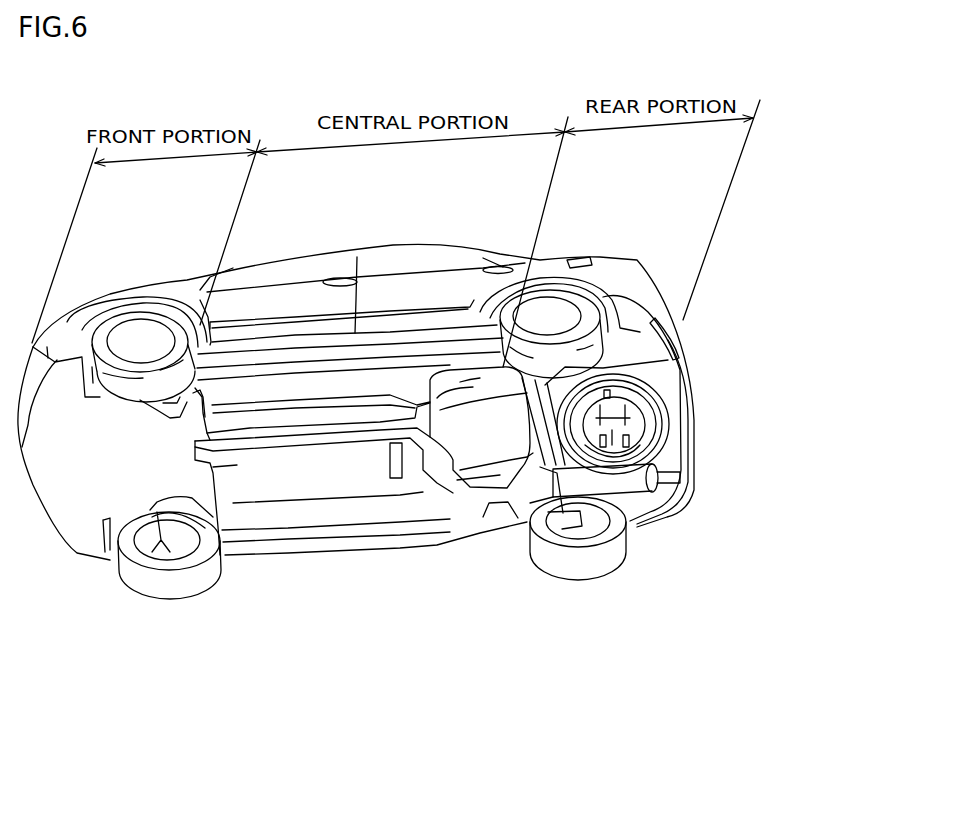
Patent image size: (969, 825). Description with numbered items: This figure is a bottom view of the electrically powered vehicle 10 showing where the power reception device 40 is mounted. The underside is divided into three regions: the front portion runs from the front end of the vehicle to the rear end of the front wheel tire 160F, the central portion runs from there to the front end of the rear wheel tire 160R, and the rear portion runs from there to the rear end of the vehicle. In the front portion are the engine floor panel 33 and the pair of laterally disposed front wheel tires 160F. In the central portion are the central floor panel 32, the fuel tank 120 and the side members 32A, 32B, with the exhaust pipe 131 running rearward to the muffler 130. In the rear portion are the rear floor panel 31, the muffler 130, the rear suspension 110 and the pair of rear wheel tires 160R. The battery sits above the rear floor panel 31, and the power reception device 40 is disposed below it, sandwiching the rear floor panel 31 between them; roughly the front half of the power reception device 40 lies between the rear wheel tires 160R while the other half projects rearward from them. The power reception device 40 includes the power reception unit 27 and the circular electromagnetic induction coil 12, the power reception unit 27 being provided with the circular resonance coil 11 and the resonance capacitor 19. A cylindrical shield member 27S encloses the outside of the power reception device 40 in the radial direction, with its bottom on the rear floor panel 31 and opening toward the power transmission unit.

The electrically powered vehicle 10 is at (416, 213).
The resonance coil 11 is at (647, 432).
The electromagnetic induction coil 12 is at (655, 450).
The capacitor 19 is at (645, 410).
The power reception unit 27 is at (741, 405).
The shield member 27S is at (653, 387).
The rear floor panel 31 is at (655, 368).
The central floor panel 32 is at (257, 388).
The side member 32A is at (483, 527).
The side member 32B is at (453, 367).
The engine floor panel 33 is at (78, 470).
The power reception device 40 is at (776, 417).
The rear suspension 110 is at (552, 445).
The fuel tank 120 is at (480, 437).
The muffler 130 is at (638, 487).
The exhaust pipe 131 is at (315, 442).
The front wheel tire 160F is at (143, 317).
The rear wheel tire 160R is at (548, 290).